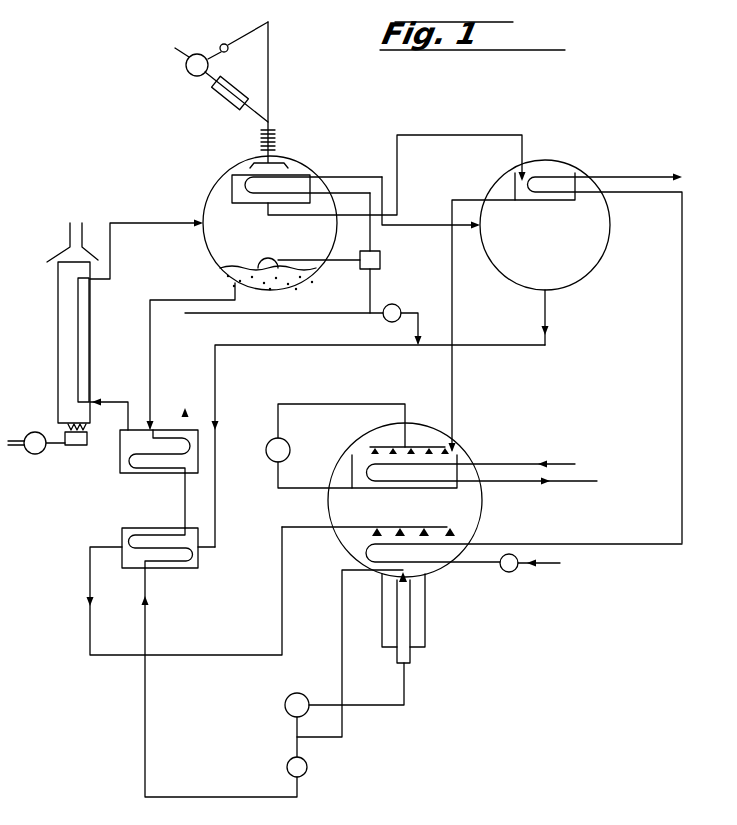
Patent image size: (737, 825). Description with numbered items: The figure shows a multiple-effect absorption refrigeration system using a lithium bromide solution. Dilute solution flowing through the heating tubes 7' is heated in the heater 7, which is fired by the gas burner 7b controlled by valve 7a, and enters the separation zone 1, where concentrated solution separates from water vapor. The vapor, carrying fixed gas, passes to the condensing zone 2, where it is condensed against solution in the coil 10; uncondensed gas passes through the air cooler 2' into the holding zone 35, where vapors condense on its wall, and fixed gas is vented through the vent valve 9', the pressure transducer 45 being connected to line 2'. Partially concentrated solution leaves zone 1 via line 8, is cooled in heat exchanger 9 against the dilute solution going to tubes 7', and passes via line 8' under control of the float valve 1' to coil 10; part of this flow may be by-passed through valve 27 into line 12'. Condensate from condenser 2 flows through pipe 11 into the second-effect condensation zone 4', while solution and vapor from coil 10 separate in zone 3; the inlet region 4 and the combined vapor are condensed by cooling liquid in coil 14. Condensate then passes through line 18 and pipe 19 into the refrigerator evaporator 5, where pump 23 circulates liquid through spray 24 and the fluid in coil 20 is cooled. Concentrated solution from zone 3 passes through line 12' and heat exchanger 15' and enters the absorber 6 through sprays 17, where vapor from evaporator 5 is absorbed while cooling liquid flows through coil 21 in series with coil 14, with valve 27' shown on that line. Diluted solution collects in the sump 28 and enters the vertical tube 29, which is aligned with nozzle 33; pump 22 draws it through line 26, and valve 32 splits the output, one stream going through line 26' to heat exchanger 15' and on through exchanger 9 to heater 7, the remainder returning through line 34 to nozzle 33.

The separation zone 1 is at (270, 223).
The float valve 1' is at (341, 282).
The condensing zone 2 is at (242, 112).
The air cooler 2' is at (285, 140).
The second-effect separation zone 3 is at (545, 225).
The inlet of vessel 3 4 is at (545, 166).
The second-effect condensation zone 4' is at (537, 215).
The refrigerator evaporator 5 is at (350, 486).
The absorber 6 is at (405, 500).
The heater 7 is at (64, 323).
The heating tubes 7' is at (100, 340).
The valve 7a is at (33, 455).
The gas burner 7b is at (76, 446).
The line 8 is at (191, 352).
The line 8' is at (284, 301).
The heat exchanger 9 is at (159, 464).
The vent valve 9' is at (184, 75).
The coil 10 is at (296, 180).
The pipe 11 is at (396, 153).
The line 12' is at (569, 318).
The coil 14 is at (560, 170).
The heat exchanger 15' is at (185, 591).
The sprays 17 is at (450, 530).
The line 18 is at (452, 265).
The pipe 19 is at (458, 412).
The coil 20 is at (511, 468).
The cooling coil 21 is at (480, 565).
The pump 22 is at (285, 705).
The pump 23 is at (290, 450).
The spray 24 is at (370, 446).
The line 26 is at (356, 699).
The line 26' is at (220, 682).
The valve 27 is at (404, 313).
The valve 27' is at (530, 579).
The sump 28 is at (427, 628).
The vertical tube 29 is at (412, 660).
The valve 32 is at (308, 770).
The nozzle 33 is at (412, 576).
The line 34 is at (343, 677).
The holding zone 35 is at (224, 104).
The pressure transducer 45 is at (224, 44).